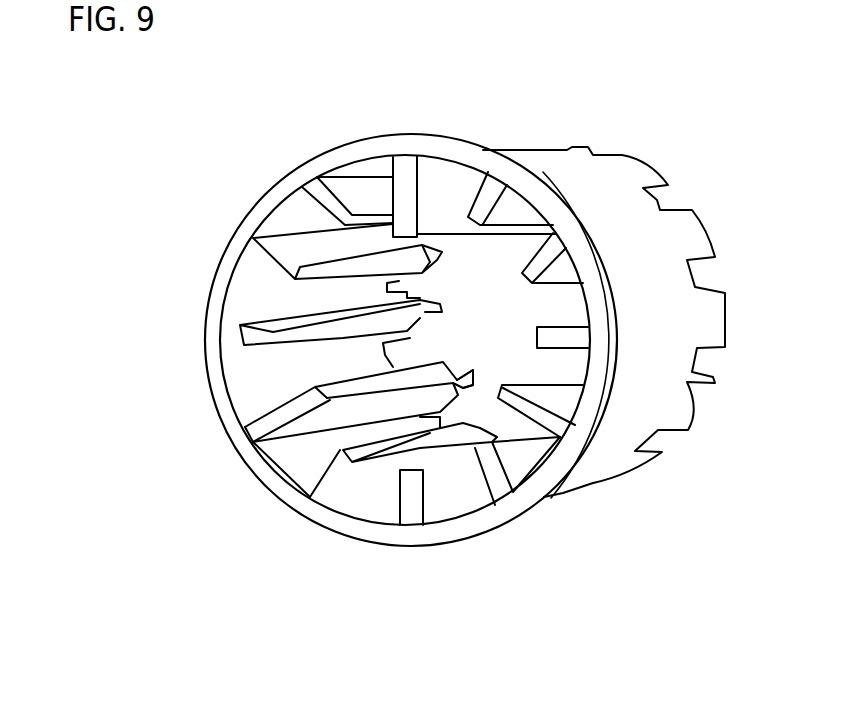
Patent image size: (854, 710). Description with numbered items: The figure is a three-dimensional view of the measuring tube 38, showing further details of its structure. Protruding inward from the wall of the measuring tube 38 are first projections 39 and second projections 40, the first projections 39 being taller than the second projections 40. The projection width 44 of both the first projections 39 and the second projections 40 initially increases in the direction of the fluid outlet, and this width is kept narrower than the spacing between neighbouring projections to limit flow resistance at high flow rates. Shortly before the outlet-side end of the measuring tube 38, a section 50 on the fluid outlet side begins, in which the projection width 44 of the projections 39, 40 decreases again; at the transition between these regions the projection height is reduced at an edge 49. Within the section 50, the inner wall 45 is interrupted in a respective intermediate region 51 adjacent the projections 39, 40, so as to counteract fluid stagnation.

The measuring tube 38 is at (536, 174).
The first projections 39 is at (323, 418).
The second projections 40 is at (365, 470).
The projection width 44 is at (345, 326).
The inner wall 45 is at (270, 374).
The edge 49 is at (464, 373).
The section on the fluid outlet side 50 is at (445, 298).
The intermediate region 51 is at (418, 353).